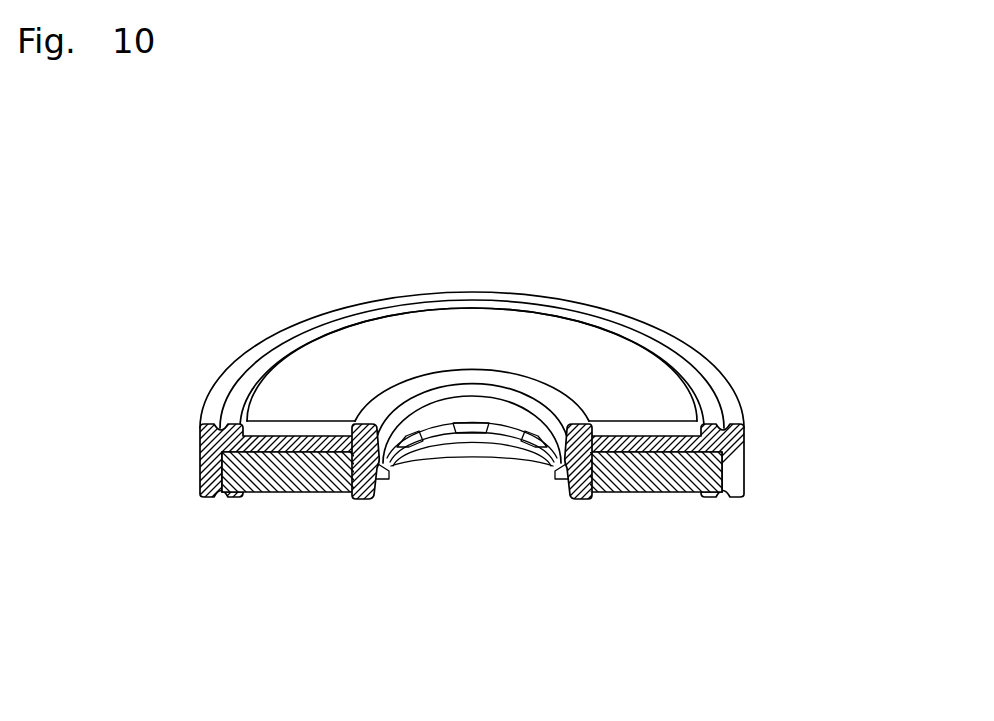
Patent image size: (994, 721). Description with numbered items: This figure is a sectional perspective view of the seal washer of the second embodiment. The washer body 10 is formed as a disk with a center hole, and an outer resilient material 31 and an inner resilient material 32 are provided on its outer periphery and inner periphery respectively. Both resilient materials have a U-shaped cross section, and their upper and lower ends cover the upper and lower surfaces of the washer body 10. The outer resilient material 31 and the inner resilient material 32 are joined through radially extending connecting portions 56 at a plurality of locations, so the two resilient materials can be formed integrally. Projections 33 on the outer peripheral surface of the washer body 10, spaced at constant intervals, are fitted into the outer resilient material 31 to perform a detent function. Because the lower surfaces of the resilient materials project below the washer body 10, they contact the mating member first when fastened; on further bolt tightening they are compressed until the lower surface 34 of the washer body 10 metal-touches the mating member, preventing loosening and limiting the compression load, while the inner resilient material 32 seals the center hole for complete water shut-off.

The washer body 10 is at (665, 483).
The outer resilient material 31 is at (205, 468).
The inner resilient material 32 is at (370, 492).
The projections 33 is at (727, 463).
The lower surface 34 is at (613, 497).
The connecting portions 56 is at (288, 438).